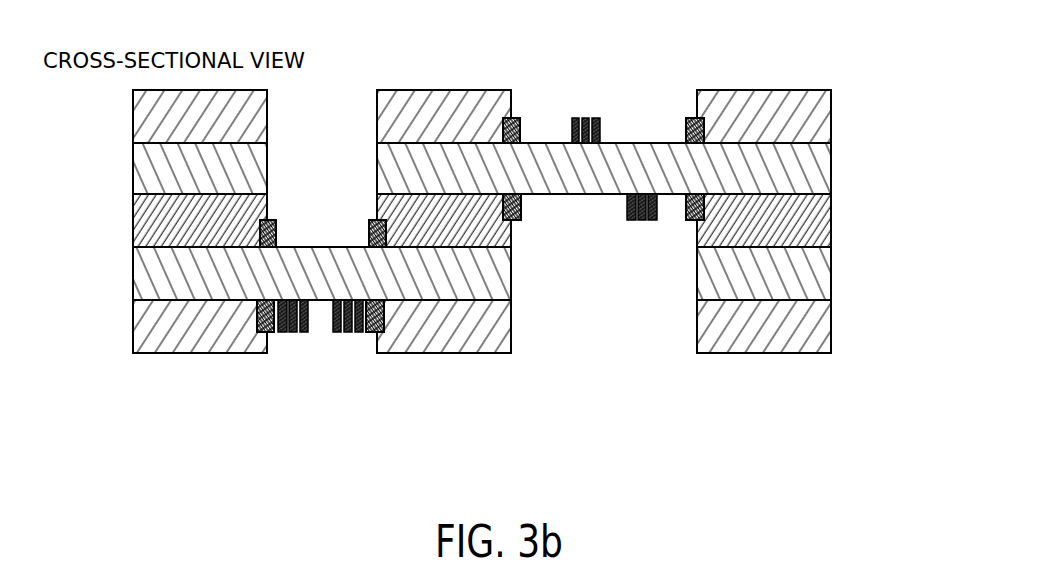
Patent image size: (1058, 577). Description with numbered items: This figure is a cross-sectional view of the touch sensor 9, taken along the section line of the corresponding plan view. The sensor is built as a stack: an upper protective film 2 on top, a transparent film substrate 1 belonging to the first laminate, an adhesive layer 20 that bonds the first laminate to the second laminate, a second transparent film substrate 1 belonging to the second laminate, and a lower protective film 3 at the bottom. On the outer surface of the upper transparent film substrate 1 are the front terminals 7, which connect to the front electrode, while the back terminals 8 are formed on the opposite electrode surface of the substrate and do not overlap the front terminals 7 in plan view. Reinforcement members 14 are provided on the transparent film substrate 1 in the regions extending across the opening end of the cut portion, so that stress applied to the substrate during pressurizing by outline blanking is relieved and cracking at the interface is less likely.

The transparent film substrate 1 is at (143, 176).
The upper protective film 2 is at (143, 120).
The lower protective film 3 is at (143, 328).
The front terminals 7 is at (574, 117).
The back terminals 8 is at (631, 222).
The touch sensor 9 is at (500, 227).
The reinforcement members 14 is at (268, 218).
The adhesive layer 20 is at (143, 230).